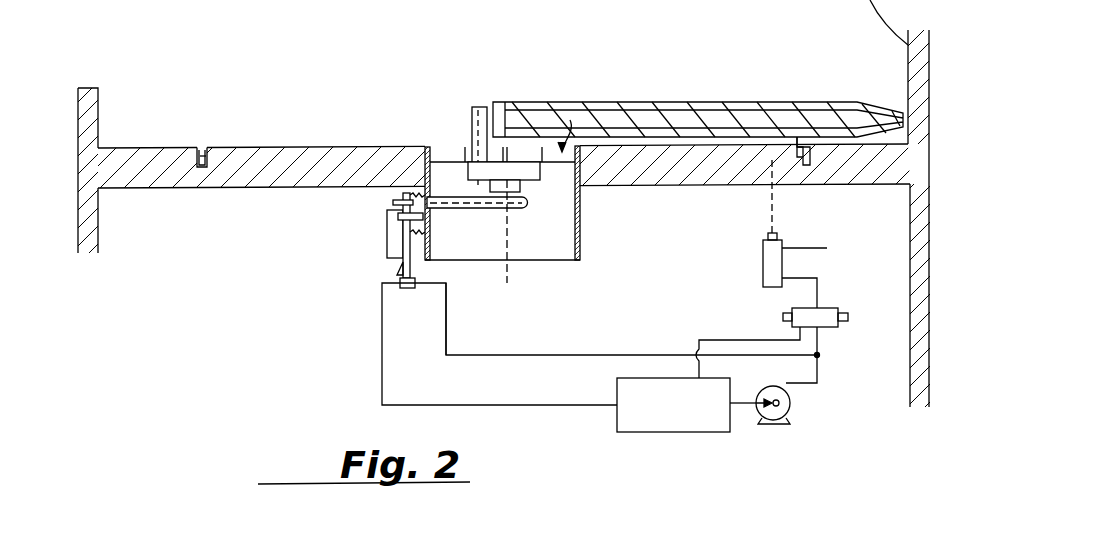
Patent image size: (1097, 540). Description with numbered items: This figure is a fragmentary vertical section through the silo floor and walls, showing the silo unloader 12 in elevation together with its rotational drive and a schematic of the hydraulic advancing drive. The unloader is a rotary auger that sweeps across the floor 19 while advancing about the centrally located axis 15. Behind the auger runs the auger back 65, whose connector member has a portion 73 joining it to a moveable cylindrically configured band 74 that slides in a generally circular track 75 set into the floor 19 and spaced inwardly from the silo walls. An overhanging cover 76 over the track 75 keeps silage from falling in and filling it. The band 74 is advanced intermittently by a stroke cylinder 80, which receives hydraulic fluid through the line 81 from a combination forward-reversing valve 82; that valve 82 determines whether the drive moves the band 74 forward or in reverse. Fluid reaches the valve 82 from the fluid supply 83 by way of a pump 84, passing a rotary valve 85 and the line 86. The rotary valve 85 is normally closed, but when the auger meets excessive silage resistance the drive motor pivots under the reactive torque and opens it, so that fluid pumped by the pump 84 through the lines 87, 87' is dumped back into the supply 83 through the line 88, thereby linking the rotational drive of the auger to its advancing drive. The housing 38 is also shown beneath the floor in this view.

The silo unloader 12 is at (637, 100).
The centrally located axis 15 is at (507, 268).
The floor 19 is at (160, 148).
The pit housing 38 is at (580, 212).
The auger back 65 is at (743, 102).
The connector member portion 73 is at (797, 150).
The band 74 is at (207, 158).
The circular track 75 is at (207, 167).
The overhanging cover 76 is at (200, 148).
The stroke cylinder 80 is at (768, 262).
The line 81 is at (817, 283).
The forward-reversing valve 82 is at (825, 316).
The fluid supply 83 is at (718, 422).
The pump 84 is at (786, 405).
The rotary valve 85 is at (407, 290).
The line 86 is at (817, 333).
The line 87 is at (826, 376).
The line 87' is at (472, 319).
The line 88 is at (382, 330).